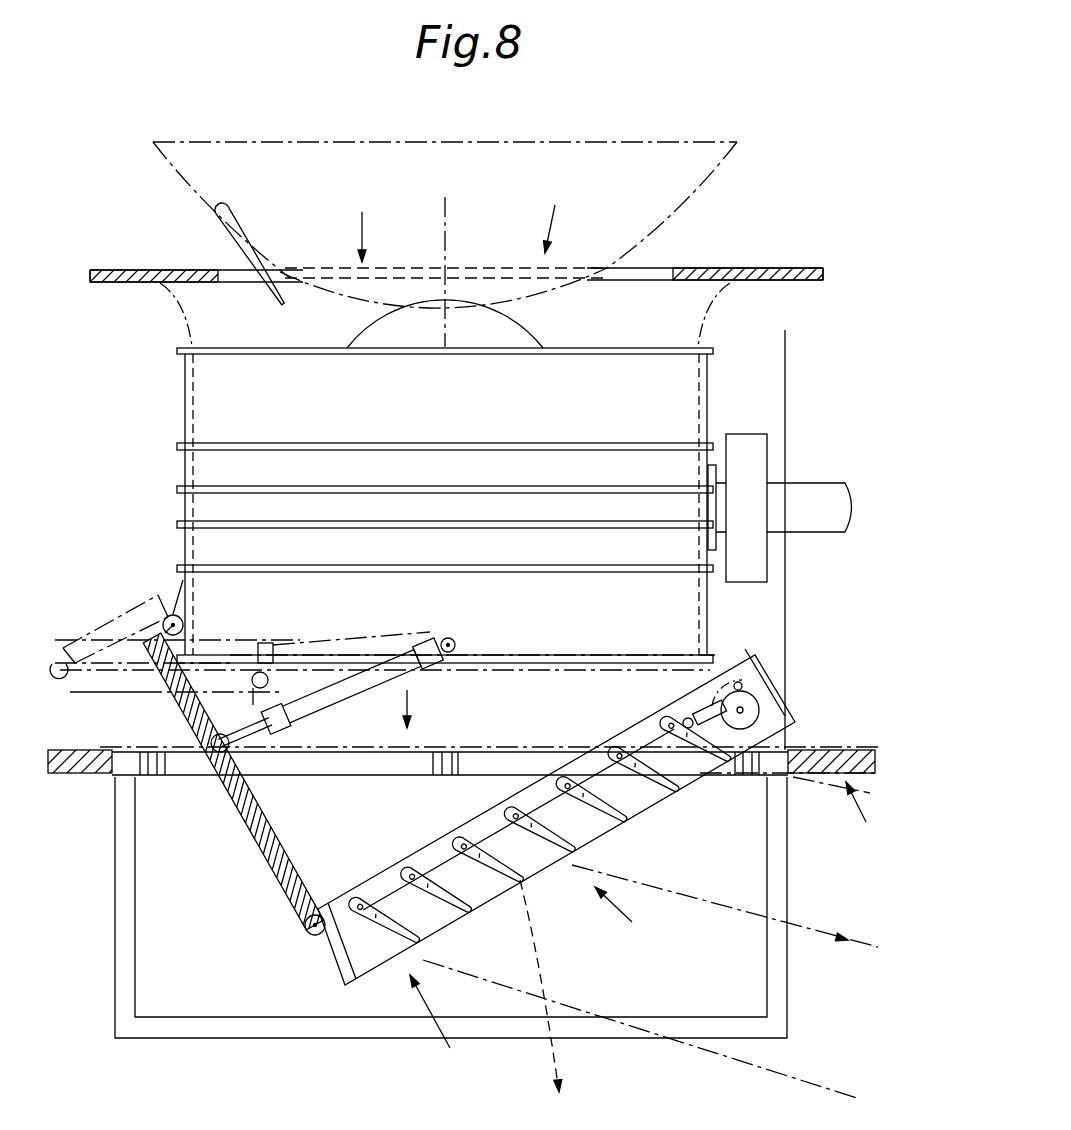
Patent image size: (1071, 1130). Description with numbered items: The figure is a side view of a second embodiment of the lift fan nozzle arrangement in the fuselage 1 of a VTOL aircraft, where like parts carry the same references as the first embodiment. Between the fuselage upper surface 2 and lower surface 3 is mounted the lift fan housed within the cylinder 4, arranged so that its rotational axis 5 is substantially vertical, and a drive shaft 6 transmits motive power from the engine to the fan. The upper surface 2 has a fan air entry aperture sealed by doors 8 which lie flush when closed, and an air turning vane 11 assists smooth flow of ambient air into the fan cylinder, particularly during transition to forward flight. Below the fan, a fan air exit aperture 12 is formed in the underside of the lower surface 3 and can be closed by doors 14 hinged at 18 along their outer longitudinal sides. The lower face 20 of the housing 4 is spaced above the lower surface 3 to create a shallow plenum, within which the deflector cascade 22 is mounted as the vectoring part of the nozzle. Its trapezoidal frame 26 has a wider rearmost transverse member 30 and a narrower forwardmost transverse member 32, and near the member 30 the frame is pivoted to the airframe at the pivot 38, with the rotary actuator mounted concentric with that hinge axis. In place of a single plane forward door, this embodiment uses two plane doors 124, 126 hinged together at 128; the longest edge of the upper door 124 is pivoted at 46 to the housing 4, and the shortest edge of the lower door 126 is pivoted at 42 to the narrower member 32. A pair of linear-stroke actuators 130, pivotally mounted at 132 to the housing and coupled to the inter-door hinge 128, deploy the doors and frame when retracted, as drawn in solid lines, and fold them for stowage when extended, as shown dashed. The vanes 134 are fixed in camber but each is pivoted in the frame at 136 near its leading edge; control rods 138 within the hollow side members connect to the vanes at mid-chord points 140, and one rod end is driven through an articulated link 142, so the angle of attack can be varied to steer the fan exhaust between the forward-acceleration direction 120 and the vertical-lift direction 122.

The fuselage 1 is at (831, 813).
The upper surface 2 is at (655, 268).
The lower surface 3 is at (90, 778).
The lift fan cylinder 4 is at (368, 418).
The rotational axis 5 is at (445, 231).
The drive shaft 6 is at (821, 483).
The door 8 is at (690, 163).
The air turning vane 11 is at (238, 222).
The fan air exit aperture 12 is at (421, 709).
The door 14 is at (117, 1003).
The hinge 18 is at (163, 776).
The lower face 20 is at (525, 666).
The deflector cascade 22 is at (629, 921).
The cascade frame 26 is at (437, 1025).
The transverse edge member 30 is at (795, 720).
The transverse edge member 32 is at (322, 968).
The pivot 38 is at (745, 708).
The pivot 42 is at (305, 928).
The pivot 46 is at (185, 625).
The arrow 120 is at (810, 922).
The arrow 122 is at (546, 1035).
The plane door 124 is at (178, 700).
The plane door 126 is at (262, 850).
The inter-door hinge 128 is at (222, 752).
The linear-stroke actuator 130 is at (350, 690).
The pivot 132 is at (455, 641).
The vane 134 is at (357, 932).
The pivot 136 is at (368, 890).
The control rod 138 is at (487, 890).
The pivot point 140 is at (375, 900).
The articulated link 142 is at (686, 716).